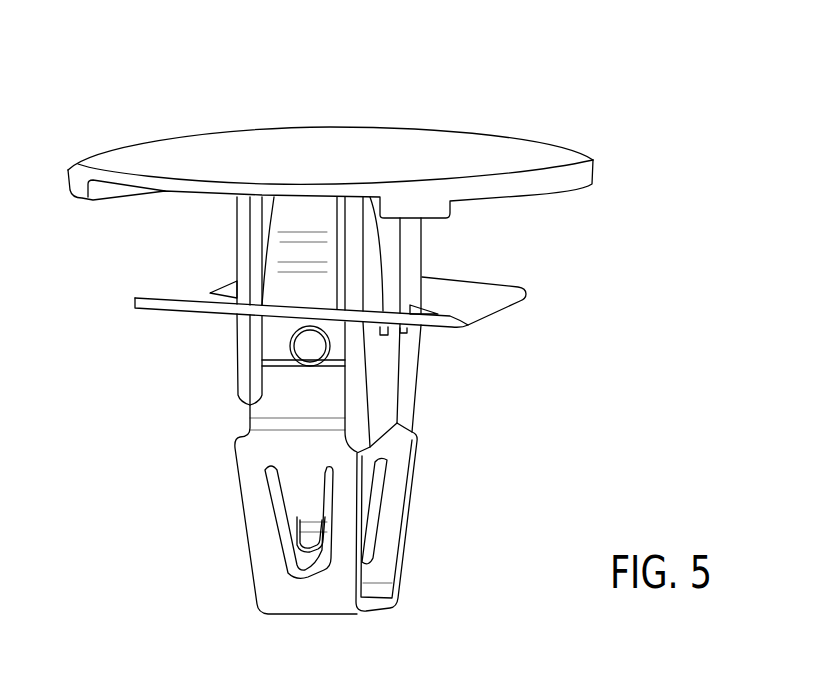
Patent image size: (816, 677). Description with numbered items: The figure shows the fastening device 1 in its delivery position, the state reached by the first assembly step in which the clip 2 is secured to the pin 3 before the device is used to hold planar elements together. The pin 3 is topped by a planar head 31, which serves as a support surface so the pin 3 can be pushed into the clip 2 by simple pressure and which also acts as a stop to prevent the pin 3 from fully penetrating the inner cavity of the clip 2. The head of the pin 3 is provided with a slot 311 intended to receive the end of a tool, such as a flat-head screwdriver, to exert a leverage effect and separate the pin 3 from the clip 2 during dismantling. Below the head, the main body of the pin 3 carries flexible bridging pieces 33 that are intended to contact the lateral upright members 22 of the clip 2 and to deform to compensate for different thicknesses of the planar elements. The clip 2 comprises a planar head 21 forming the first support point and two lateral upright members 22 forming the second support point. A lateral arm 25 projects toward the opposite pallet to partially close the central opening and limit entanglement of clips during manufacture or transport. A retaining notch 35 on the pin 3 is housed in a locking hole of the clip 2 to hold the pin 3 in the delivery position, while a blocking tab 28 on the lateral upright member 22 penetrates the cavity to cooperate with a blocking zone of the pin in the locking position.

The fastening device 1 is at (383, 324).
The clip 2 is at (359, 445).
The pin 3 is at (345, 174).
The planar head 21 is at (487, 325).
The lateral upright member 22 is at (402, 533).
The lateral arm 25 is at (293, 464).
The blocking tab 28 is at (300, 527).
The planar head 31 is at (238, 147).
The flexible bridging piece 33 is at (283, 250).
The retaining notch 35 is at (300, 342).
The slot 311 is at (110, 193).